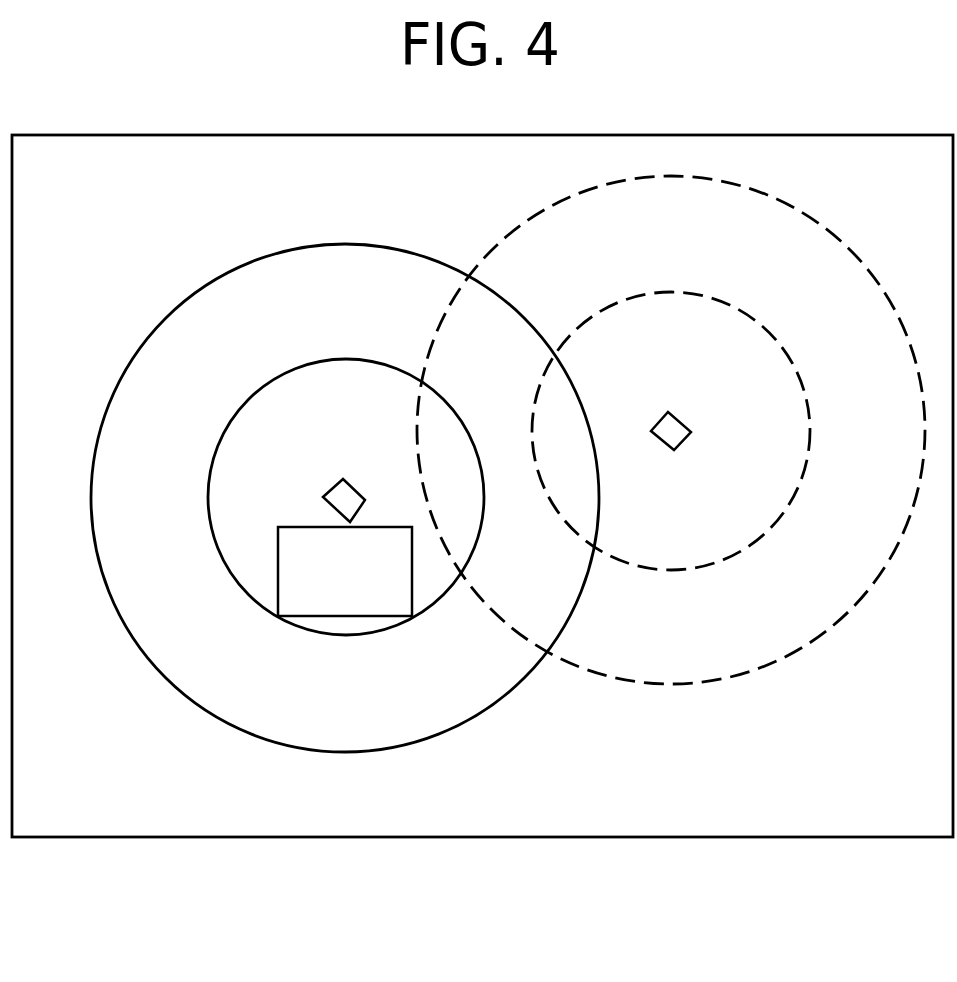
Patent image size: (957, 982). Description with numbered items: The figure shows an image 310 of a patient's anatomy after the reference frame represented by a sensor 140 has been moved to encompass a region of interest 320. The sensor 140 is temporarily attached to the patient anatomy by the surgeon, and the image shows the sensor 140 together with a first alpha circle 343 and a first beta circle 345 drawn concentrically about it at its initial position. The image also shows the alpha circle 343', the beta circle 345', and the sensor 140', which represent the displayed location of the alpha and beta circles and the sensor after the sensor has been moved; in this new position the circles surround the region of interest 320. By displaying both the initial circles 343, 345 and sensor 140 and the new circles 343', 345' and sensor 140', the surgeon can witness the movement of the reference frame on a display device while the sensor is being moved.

The first image 310 is at (517, 838).
The region of interest 320 is at (302, 527).
The sensor 140 is at (681, 386).
The sensor 140' is at (361, 458).
The first alpha circle 343 is at (692, 413).
The alpha circle 343' is at (333, 489).
The first beta circle 345 is at (675, 430).
The beta circle 345' is at (342, 498).